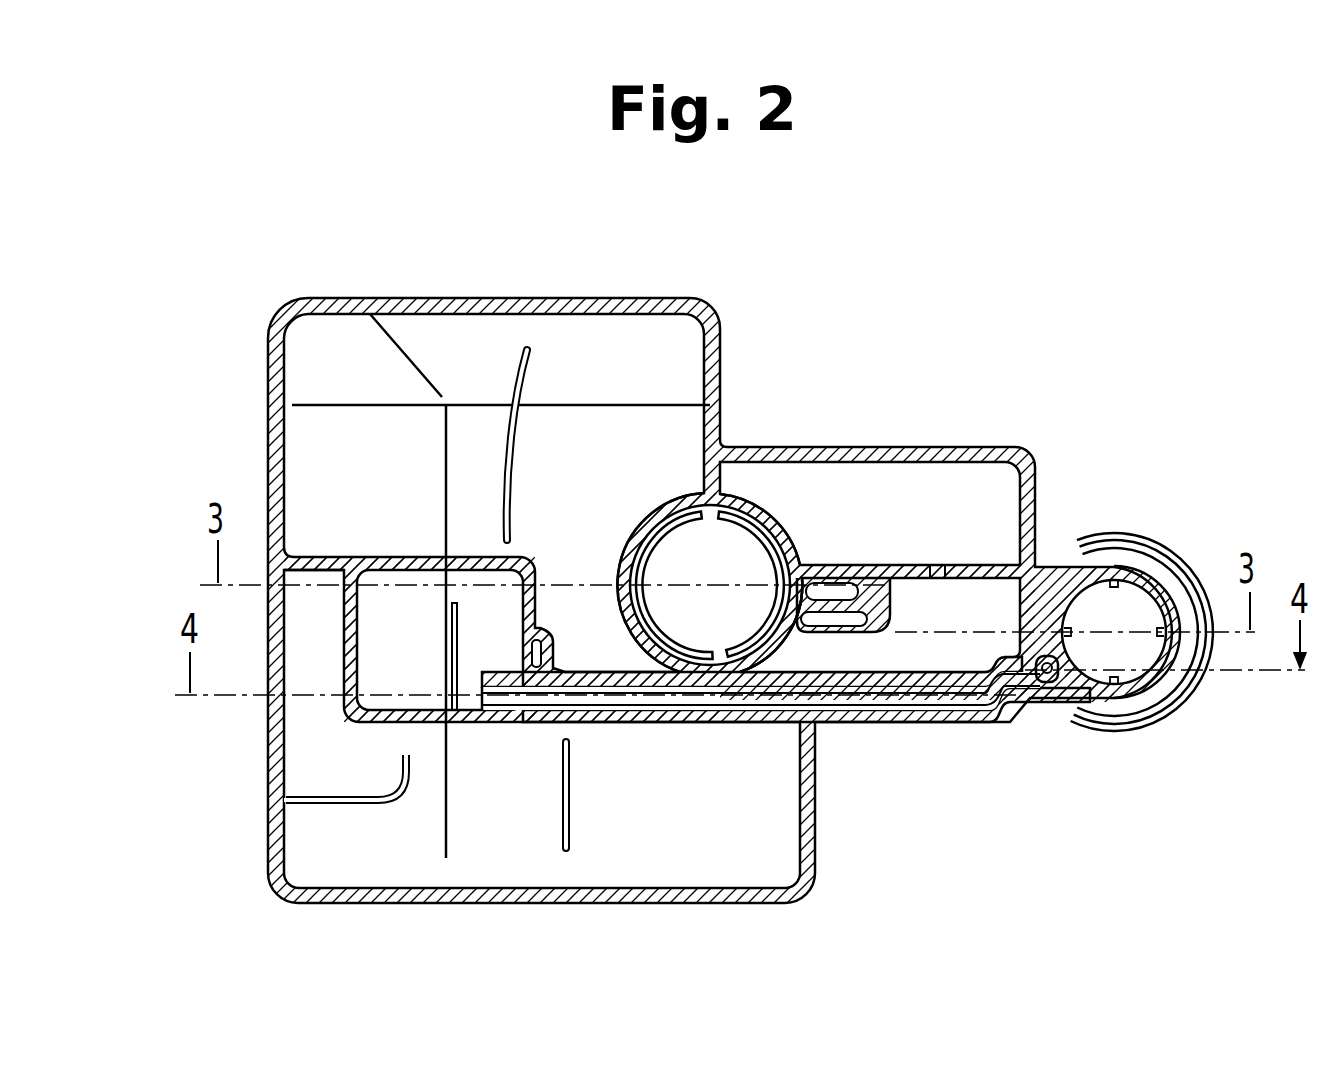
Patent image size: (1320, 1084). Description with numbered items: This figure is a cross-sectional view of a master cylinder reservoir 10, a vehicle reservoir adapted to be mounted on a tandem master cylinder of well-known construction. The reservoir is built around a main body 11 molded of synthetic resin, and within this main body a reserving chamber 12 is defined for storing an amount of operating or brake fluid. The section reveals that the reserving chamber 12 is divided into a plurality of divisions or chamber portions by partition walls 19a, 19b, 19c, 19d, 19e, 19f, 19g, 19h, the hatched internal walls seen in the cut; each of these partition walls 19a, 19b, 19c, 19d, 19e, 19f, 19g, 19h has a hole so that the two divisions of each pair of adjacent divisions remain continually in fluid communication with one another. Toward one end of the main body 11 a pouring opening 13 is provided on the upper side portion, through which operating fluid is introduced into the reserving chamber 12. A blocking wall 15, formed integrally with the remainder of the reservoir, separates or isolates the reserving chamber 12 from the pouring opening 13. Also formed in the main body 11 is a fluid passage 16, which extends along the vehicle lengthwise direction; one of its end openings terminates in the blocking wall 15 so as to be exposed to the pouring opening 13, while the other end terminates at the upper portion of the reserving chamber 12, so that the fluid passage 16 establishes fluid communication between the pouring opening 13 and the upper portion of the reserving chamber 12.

The master cylinder reservoir 10 is at (923, 403).
The main body 11 is at (932, 723).
The reserving chamber 12 is at (556, 472).
The pouring opening 13 is at (1130, 612).
The blocking wall 15 is at (1012, 605).
The fluid passage 16 is at (808, 688).
The partition wall 19a is at (347, 645).
The partition wall 19b is at (520, 620).
The partition wall 19c is at (560, 656).
The partition wall 19d is at (665, 505).
The partition wall 19e is at (793, 640).
The partition wall 19f is at (340, 556).
The partition wall 19g is at (960, 566).
The partition wall 19h is at (848, 588).